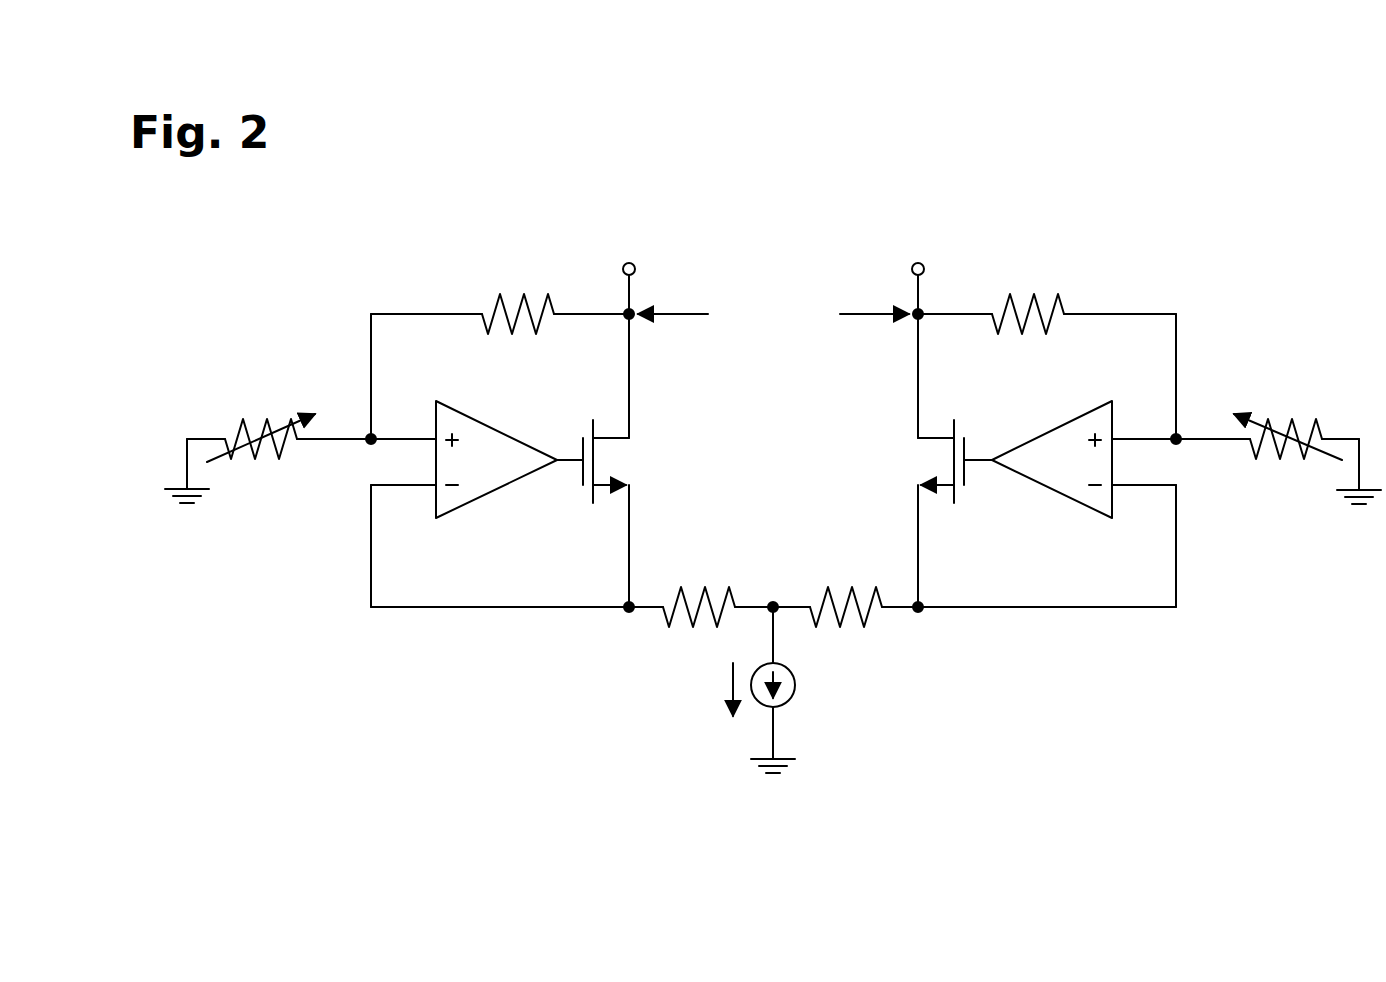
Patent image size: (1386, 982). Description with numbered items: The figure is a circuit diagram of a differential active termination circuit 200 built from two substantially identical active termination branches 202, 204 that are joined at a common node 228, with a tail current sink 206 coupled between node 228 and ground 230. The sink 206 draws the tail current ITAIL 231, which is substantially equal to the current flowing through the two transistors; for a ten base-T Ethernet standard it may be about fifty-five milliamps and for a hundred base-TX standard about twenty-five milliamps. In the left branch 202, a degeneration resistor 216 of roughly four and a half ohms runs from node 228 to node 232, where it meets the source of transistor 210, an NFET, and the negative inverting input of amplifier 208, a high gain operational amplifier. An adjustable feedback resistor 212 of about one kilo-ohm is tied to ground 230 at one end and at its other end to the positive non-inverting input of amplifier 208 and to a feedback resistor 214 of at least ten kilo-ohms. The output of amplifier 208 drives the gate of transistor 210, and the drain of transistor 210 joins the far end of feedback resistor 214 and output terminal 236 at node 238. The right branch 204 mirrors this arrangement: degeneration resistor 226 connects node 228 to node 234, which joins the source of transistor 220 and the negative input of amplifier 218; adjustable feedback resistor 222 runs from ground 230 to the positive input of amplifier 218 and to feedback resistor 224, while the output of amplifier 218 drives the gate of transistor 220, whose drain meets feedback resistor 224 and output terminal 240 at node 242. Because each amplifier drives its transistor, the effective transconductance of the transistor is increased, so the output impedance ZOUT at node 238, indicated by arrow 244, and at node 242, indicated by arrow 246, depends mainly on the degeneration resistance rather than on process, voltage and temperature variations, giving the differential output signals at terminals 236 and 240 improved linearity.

The active termination circuit 200 is at (1294, 206).
The active termination branch 202 is at (388, 679).
The active termination branch 204 is at (1159, 679).
The tail current sink 206 is at (795, 685).
The amplifier 208 is at (492, 418).
The transistor 210 is at (612, 436).
The feedback resistor 212 is at (258, 430).
The feedback resistor 214 is at (516, 300).
The degeneration resistor 216 is at (696, 600).
The amplifier 218 is at (1058, 418).
The transistor 220 is at (930, 436).
The feedback resistor 222 is at (1310, 430).
The feedback resistor 224 is at (1052, 300).
The degeneration resistor 226 is at (842, 600).
The node 228 is at (772, 602).
The ground 230 is at (197, 489).
The tail current 231 is at (732, 684).
The node 232 is at (628, 612).
The node 234 is at (918, 612).
The output terminal 236 is at (630, 262).
The node 238 is at (625, 311).
The output terminal 240 is at (918, 262).
The node 242 is at (922, 311).
The arrow 244 is at (688, 318).
The arrow 246 is at (862, 318).